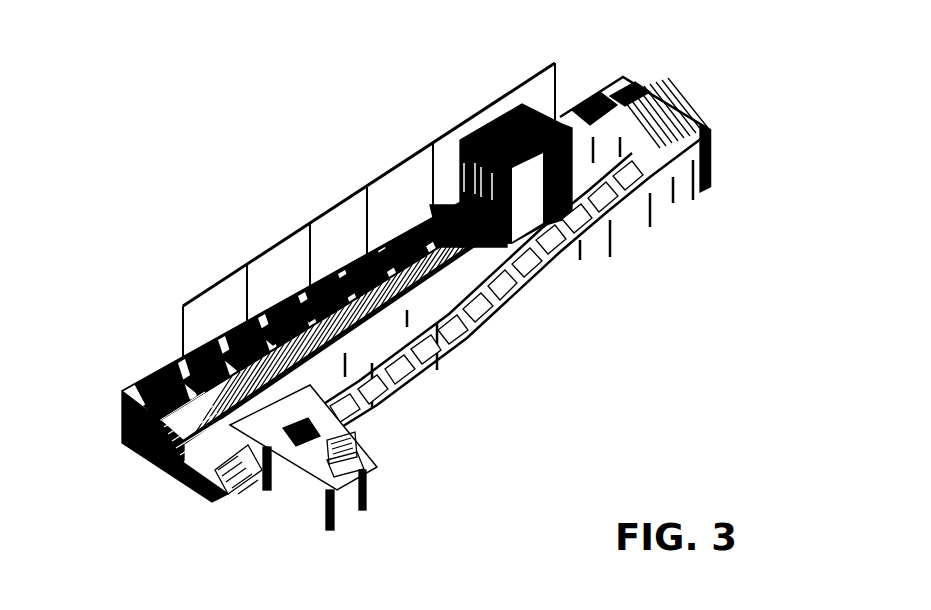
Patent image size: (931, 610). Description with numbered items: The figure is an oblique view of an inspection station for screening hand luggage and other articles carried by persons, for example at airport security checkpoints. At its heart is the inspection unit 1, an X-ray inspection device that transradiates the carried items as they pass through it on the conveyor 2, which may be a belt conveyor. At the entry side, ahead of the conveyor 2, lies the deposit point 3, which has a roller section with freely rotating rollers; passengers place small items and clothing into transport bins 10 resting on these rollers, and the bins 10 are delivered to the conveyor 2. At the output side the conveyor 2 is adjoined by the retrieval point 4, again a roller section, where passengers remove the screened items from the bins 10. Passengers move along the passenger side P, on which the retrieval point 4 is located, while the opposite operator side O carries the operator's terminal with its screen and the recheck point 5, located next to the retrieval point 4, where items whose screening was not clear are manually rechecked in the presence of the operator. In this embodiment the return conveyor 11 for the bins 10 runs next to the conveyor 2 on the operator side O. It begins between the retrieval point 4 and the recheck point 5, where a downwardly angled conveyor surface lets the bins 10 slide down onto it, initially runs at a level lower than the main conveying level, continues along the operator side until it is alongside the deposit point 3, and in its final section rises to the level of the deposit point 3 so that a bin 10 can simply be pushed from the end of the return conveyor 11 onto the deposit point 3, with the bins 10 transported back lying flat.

The inspection unit 1 is at (492, 128).
The conveyor 2 is at (369, 211).
The deposit point 3 is at (618, 72).
The retrieval point 4 is at (150, 378).
The recheck point 5 is at (313, 460).
The transport bins 10 is at (527, 250).
The return conveyor 11 is at (437, 368).
The passenger side P is at (306, 91).
The operator side O is at (643, 360).